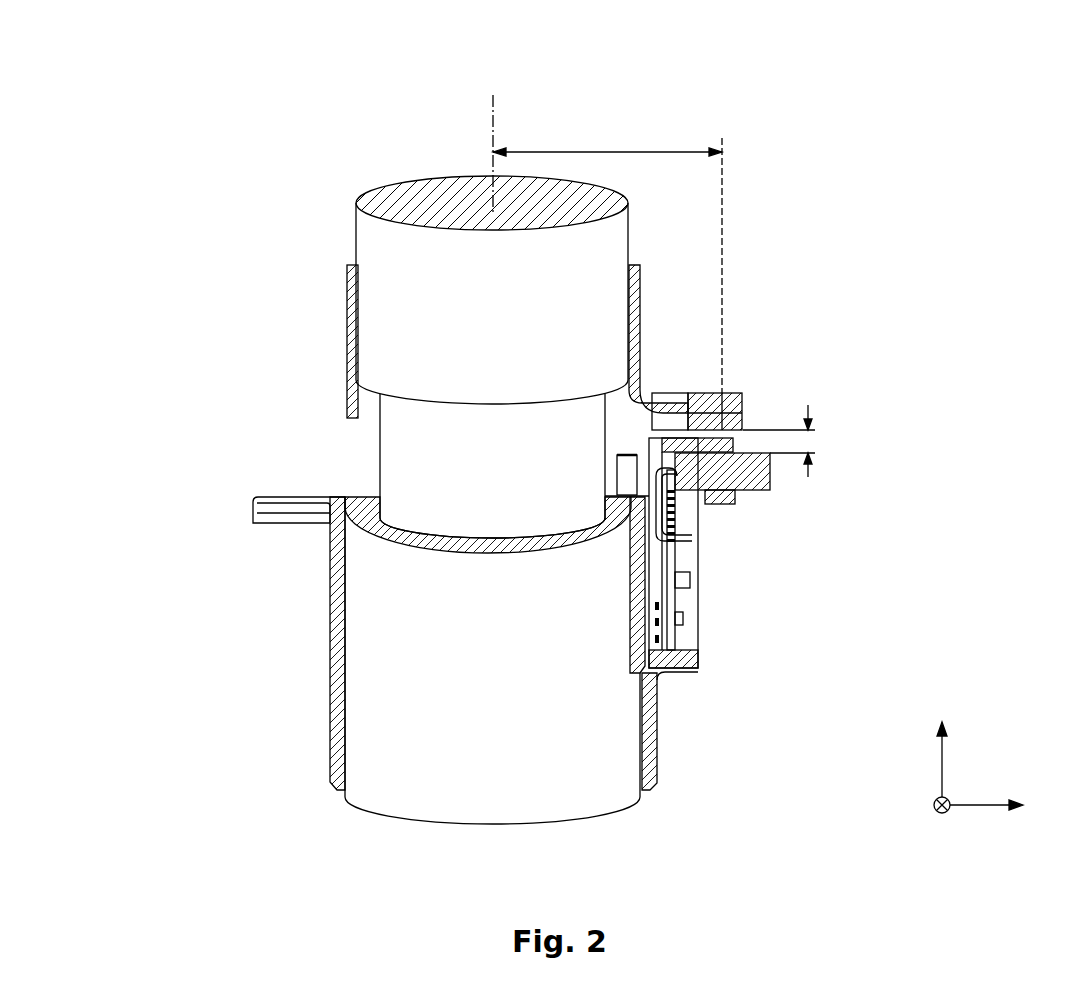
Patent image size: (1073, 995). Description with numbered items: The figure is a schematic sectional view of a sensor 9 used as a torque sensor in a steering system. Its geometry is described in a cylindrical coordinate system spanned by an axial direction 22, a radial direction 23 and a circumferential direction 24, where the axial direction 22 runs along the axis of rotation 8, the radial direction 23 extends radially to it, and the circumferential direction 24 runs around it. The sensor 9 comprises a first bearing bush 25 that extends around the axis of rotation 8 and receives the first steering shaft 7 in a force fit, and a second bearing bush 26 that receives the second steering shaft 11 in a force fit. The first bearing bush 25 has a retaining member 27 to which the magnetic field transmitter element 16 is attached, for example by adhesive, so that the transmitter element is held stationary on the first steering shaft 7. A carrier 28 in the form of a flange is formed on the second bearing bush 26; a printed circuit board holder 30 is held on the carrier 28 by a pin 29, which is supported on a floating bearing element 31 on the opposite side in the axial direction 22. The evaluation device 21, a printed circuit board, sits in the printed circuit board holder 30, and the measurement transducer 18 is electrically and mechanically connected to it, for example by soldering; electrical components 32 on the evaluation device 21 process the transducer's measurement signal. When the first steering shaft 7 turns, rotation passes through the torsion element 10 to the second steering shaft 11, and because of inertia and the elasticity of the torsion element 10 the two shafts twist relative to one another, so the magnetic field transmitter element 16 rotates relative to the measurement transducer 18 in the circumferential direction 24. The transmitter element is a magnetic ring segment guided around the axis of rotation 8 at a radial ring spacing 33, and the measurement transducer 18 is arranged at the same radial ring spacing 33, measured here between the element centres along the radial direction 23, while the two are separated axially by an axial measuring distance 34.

The first steering shaft 7 is at (356, 222).
The axis of rotation 8 is at (492, 97).
The sensor 9 is at (284, 132).
The torsion element 10 is at (410, 450).
The second steering shaft 11 is at (340, 786).
The magnetic field transmitter element 16 is at (733, 393).
The measurement transducer 18 is at (770, 478).
The evaluation device 21 is at (690, 646).
The axial direction 22 is at (946, 732).
The radial direction 23 is at (1015, 800).
The circumferential direction 24 is at (940, 815).
The first bearing bush 25 is at (348, 289).
The second bearing bush 26 is at (333, 624).
The retaining member 27 is at (743, 413).
The carrier 28 is at (253, 512).
The pin 29 is at (700, 505).
The printed circuit board holder 30 is at (683, 546).
The floating bearing element 31 is at (665, 680).
The electrical components 32 is at (690, 578).
The radial ring spacing 33 is at (660, 152).
The axial measuring distance 34 is at (813, 410).